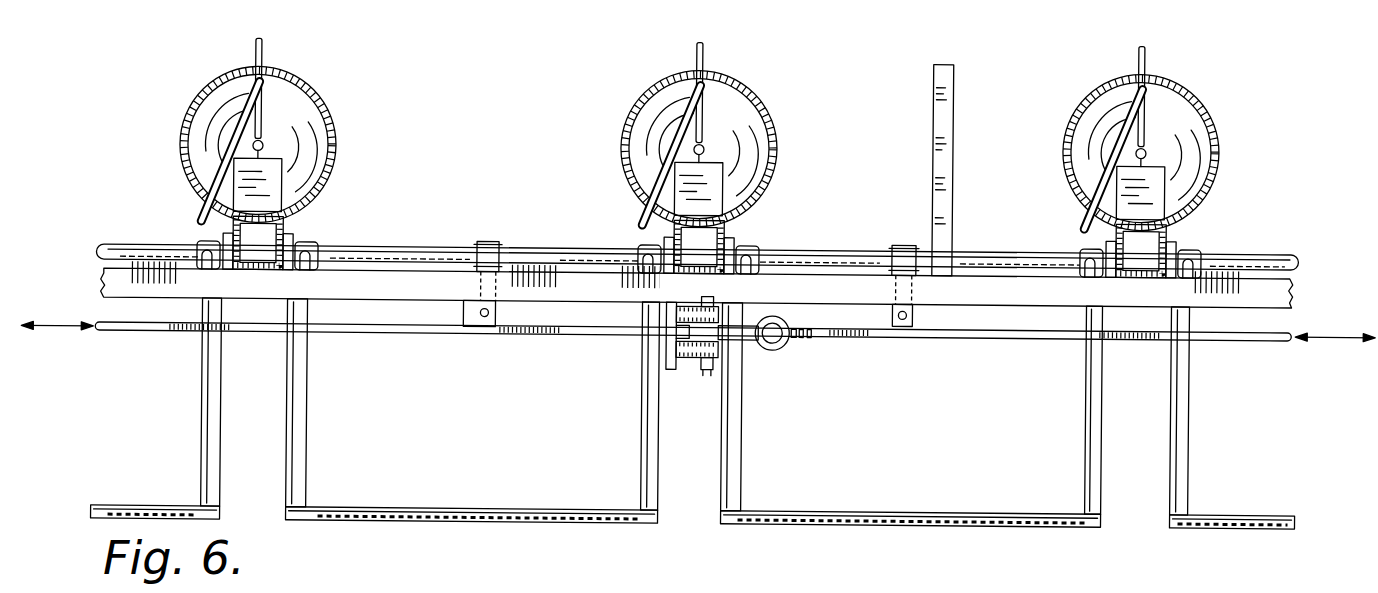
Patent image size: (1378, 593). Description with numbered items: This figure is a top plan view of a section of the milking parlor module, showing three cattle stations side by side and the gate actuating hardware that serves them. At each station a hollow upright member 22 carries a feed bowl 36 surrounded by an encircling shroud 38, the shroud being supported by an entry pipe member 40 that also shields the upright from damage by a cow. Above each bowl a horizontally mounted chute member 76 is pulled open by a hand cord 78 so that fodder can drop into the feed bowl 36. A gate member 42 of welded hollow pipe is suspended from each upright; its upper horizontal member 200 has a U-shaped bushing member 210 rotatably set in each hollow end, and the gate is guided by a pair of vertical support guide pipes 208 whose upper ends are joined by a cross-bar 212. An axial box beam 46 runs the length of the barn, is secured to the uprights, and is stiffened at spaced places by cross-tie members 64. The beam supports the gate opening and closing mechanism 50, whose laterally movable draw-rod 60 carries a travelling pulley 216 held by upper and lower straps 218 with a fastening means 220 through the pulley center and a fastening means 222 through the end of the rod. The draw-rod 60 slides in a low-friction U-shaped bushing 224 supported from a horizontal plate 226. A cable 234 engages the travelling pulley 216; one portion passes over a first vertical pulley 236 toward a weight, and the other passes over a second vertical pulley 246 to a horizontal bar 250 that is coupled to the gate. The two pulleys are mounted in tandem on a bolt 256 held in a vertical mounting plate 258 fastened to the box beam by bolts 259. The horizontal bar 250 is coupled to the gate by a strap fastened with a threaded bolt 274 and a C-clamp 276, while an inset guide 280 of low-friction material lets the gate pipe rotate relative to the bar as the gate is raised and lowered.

The upright member 22 is at (285, 232).
The feed bowl 36 is at (316, 90).
The shroud 38 is at (207, 113).
The entry pipe member 40 is at (200, 210).
The gate member 42 is at (550, 212).
The axial box beam 46 is at (106, 292).
The gate opening and closing mechanism 50 is at (752, 388).
The draw-rod 60 is at (162, 331).
The cross-tie member 64 is at (936, 126).
The chute member 76 is at (270, 190).
The hand cord 78 is at (253, 50).
The upper horizontal member 200 is at (106, 242).
The vertical support guide pipe 208 is at (208, 475).
The U-shaped bushing member 210 is at (206, 241).
The cross-bar 212 is at (110, 505).
The travelling pulley 216 is at (786, 340).
The strap 218 is at (791, 335).
The fastening means 220 is at (776, 345).
The fastening means 222 is at (793, 328).
The U-shaped bushing 224 is at (682, 312).
The horizontal plate 226 is at (680, 345).
The cable 234 is at (781, 315).
The first vertical pulley 236 is at (702, 360).
The second vertical pulley 246 is at (713, 294).
The horizontal bar 250 is at (530, 298).
The bolt 256 is at (712, 368).
The vertical mounting plate 258 is at (668, 299).
The bolts 259 is at (672, 338).
The threaded bolt 274 is at (490, 323).
The C-clamp 276 is at (492, 238).
The inset guide 280 is at (478, 266).